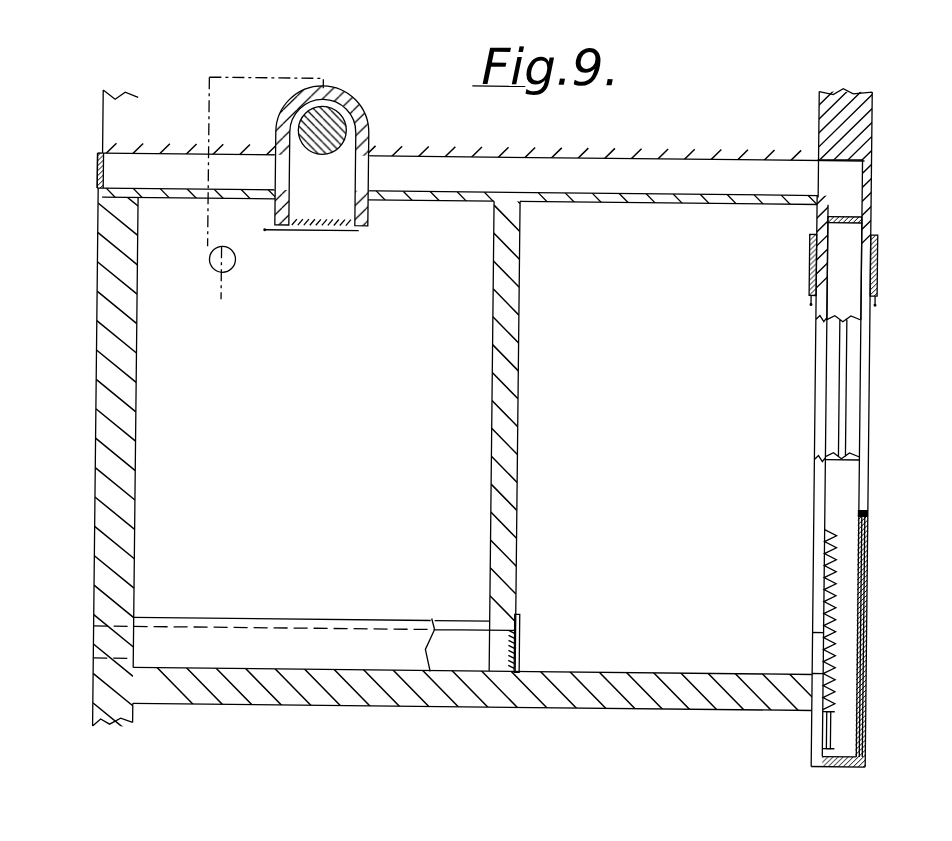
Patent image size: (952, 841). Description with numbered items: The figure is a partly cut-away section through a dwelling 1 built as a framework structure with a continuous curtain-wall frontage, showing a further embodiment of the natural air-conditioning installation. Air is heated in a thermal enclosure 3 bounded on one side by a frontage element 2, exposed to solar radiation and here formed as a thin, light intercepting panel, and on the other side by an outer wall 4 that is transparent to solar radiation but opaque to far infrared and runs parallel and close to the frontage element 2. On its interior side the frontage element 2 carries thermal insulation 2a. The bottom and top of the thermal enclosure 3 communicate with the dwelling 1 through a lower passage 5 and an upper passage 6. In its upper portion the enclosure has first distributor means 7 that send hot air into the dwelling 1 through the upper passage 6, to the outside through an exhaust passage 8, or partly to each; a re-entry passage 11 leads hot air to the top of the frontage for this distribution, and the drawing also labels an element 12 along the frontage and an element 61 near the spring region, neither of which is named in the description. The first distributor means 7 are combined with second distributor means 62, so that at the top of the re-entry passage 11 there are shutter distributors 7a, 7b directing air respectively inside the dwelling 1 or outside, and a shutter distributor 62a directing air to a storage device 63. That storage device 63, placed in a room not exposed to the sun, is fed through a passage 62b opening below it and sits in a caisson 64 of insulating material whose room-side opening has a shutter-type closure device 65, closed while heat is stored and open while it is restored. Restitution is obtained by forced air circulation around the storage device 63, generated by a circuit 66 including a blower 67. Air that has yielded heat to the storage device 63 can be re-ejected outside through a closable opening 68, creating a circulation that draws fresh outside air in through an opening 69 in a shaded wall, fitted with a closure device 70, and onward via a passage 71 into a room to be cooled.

The dwelling 1 is at (327, 394).
The frontage element 2 is at (839, 546).
The thermal insulation 2a is at (819, 581).
The thermal enclosure 3 is at (850, 661).
The outer wall 4 is at (863, 596).
The lower passage 5 is at (821, 643).
The upper passage 6 is at (820, 245).
The first distributor means 7 is at (843, 283).
The shutter distributor 7a is at (808, 240).
The shutter distributor 7b is at (860, 285).
The exhaust passage 8 is at (844, 271).
The re-entry passage 11 is at (847, 471).
The channel 12 is at (842, 364).
The spring end 61 is at (834, 536).
The second distributor means 62 is at (821, 265).
The shutter distributor 62a is at (856, 213).
The passage 62b is at (678, 191).
The storage device 63 is at (307, 154).
The caisson 64 is at (365, 216).
The closure device 65 is at (296, 234).
The circuit 66 is at (206, 218).
The blower 67 is at (217, 261).
The closable opening 68 is at (95, 186).
The opening 69 is at (123, 652).
The closure device 70 is at (520, 639).
The passage 71 is at (463, 650).